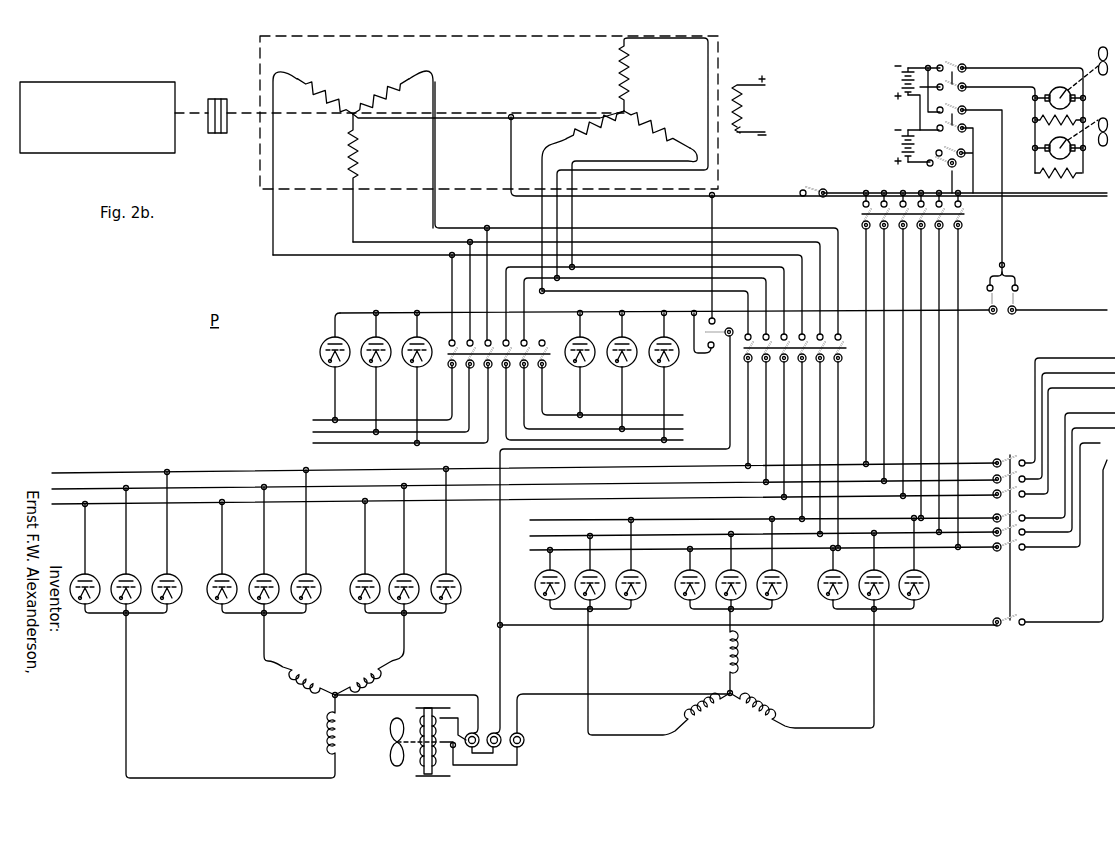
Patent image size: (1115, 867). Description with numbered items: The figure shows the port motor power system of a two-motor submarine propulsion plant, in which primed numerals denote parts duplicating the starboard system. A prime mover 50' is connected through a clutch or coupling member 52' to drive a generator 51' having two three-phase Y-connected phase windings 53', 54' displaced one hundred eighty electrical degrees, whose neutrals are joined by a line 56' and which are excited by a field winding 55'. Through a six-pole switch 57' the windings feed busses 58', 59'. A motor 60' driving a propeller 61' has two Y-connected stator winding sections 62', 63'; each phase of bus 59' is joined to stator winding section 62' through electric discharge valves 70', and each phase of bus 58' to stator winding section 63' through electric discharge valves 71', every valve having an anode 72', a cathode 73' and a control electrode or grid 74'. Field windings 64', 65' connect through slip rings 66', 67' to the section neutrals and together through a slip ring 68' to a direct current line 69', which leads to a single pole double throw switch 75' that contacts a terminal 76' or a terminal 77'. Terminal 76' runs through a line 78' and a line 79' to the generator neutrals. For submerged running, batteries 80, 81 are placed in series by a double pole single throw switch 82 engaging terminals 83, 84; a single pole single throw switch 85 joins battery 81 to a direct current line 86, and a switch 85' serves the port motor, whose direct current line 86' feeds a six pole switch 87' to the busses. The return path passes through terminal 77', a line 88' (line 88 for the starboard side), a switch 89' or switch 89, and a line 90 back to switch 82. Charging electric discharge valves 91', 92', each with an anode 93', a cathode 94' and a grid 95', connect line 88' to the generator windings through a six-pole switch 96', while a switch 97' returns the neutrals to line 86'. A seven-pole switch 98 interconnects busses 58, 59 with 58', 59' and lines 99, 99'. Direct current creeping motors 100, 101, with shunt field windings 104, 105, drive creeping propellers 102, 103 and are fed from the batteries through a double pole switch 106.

The prime mover 50' is at (114, 117).
The clutch or coupling member 52' is at (217, 99).
The generator 51' is at (472, 112).
The phase winding 54' is at (353, 163).
The line 56' is at (488, 127).
The phase winding 53' is at (625, 164).
The line 79' is at (794, 156).
The field winding 55' is at (761, 105).
The line 78' is at (736, 256).
The battery 80 is at (903, 82).
The battery 81 is at (903, 148).
The terminal 84 is at (937, 113).
The terminal 83 is at (937, 131).
The double pole single throw switch 82 is at (965, 122).
The single pole single throw switch 85 is at (962, 145).
The single pole single throw switch 85' is at (941, 175).
The direct current line 86' is at (965, 131).
The switch 97' is at (815, 180).
The double pole switch 106 is at (957, 63).
The line 90 is at (1003, 165).
The direct current creeping motor 100 is at (1059, 88).
The direct current creeping motor 101 is at (1059, 141).
The creeping propeller 102 is at (1098, 60).
The creeping propeller 103 is at (1102, 140).
The shunt field winding 104 is at (1059, 112).
The shunt field winding 105 is at (1052, 176).
The direct current line 86 is at (1092, 184).
The six pole switch 87' is at (928, 370).
The switch 89' is at (982, 289).
The switch 89 is at (1024, 293).
The line 88 is at (1061, 300).
The line 88' is at (665, 322).
The terminal 76' is at (725, 306).
The single pole double throw switch 75' is at (626, 522).
The terminal 77' is at (704, 344).
The six-pole switch 57' is at (570, 316).
The six-pole switch 96' is at (490, 297).
The anode 93' is at (442, 368).
The electric discharge valve 92' is at (400, 378).
The control electrode or grid 95' is at (435, 364).
The cathode 94' is at (455, 371).
The electric discharge valve 91' is at (594, 377).
The bus 58' is at (524, 476).
The electric discharge valve 71' is at (265, 541).
The anode 72' is at (304, 568).
The control electrode or grid 74' is at (294, 596).
The cathode 73' is at (303, 612).
The bus 59' is at (763, 525).
The electric discharge valve 70' is at (732, 564).
The seven-pole switch 98 is at (996, 460).
The bus 58 is at (1070, 414).
The bus 59 is at (1070, 467).
The line 99' is at (762, 613).
The line 99 is at (1066, 534).
The stator winding section 63' is at (265, 695).
The motor 60' is at (466, 645).
The direct current line 69' is at (517, 660).
The field winding 65' is at (426, 733).
The propeller 61' is at (399, 742).
The field winding 64' is at (404, 780).
The slip ring 67' is at (473, 730).
The slip ring 68' is at (495, 727).
The slip ring 66' is at (619, 720).
The stator winding section 62' is at (731, 672).